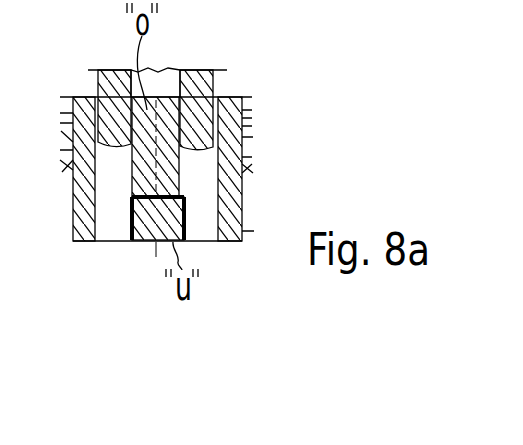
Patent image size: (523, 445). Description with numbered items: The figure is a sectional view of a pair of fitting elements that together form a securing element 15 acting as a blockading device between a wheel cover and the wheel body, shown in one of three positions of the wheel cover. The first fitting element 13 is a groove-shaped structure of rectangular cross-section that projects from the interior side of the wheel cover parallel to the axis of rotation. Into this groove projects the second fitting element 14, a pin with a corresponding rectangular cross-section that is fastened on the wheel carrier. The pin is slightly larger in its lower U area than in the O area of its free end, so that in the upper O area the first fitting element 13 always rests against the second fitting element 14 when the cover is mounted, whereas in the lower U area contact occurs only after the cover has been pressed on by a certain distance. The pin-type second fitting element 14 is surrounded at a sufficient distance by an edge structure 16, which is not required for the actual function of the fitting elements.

The first fitting element 13 is at (199, 91).
The second fitting element 14 is at (158, 196).
The securing element 15 is at (280, 35).
The edge structure 16 is at (77, 225).